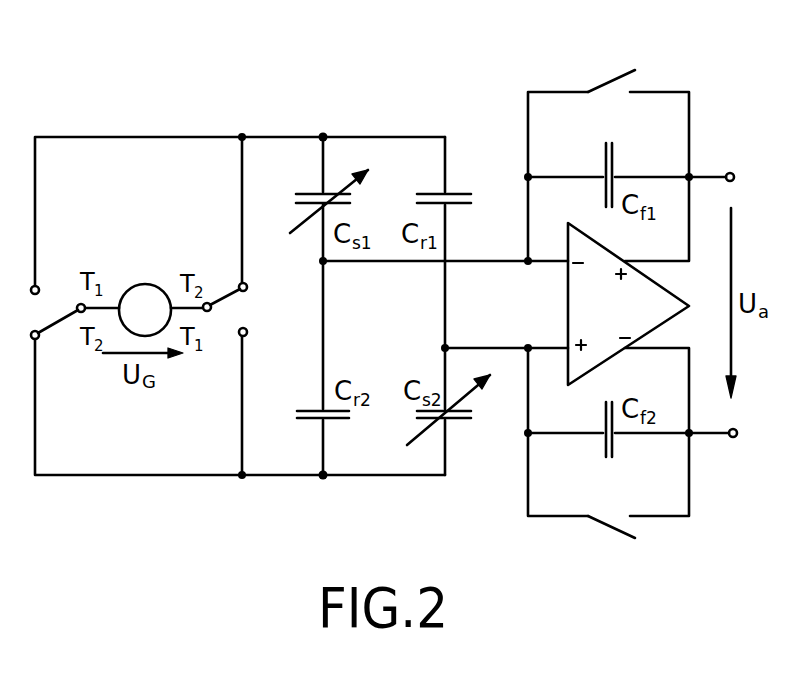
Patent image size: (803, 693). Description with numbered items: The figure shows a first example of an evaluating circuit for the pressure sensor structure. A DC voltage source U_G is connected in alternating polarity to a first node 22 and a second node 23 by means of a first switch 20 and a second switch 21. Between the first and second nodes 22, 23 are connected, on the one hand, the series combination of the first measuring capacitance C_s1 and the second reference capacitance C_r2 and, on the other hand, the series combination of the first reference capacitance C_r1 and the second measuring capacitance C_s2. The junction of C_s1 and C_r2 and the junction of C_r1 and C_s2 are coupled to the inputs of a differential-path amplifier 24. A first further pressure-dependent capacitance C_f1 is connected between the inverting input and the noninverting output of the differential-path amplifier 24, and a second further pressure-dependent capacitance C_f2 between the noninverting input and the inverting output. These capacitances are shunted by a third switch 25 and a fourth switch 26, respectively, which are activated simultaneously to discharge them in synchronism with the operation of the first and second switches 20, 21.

The first switch 20 is at (50, 305).
The second switch 21 is at (238, 297).
The first node 22 is at (323, 135).
The second node 23 is at (323, 479).
The differential-path amplifier 24 is at (592, 297).
The third switch 25 is at (600, 84).
The fourth switch 26 is at (606, 526).